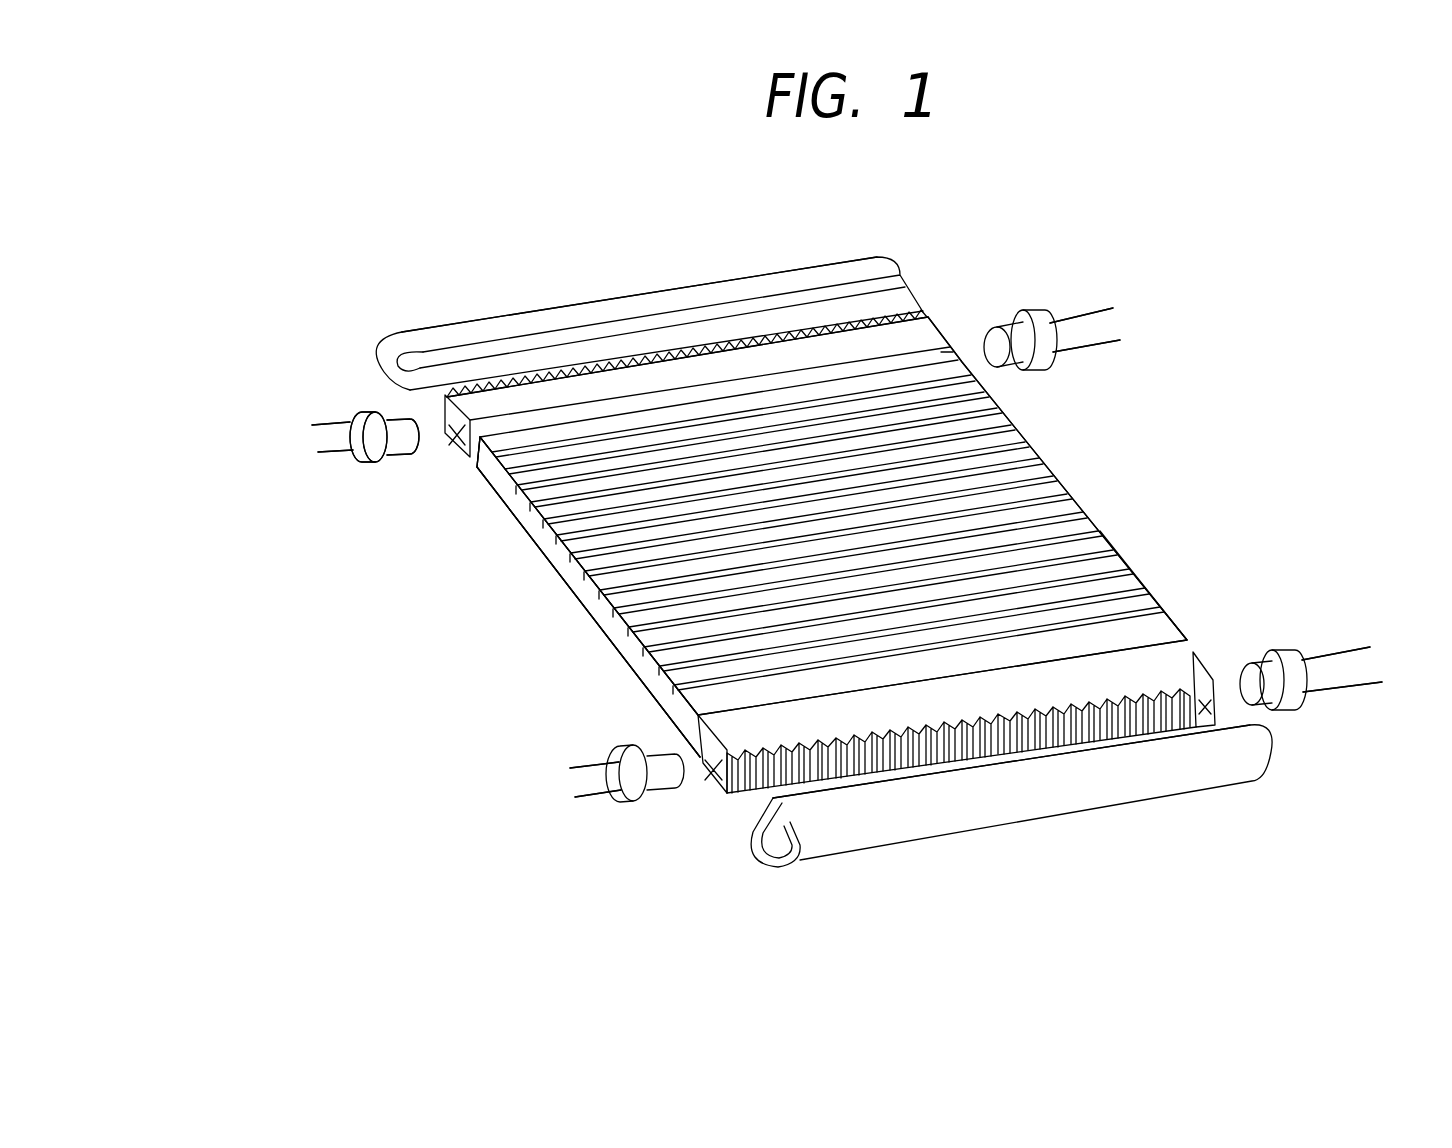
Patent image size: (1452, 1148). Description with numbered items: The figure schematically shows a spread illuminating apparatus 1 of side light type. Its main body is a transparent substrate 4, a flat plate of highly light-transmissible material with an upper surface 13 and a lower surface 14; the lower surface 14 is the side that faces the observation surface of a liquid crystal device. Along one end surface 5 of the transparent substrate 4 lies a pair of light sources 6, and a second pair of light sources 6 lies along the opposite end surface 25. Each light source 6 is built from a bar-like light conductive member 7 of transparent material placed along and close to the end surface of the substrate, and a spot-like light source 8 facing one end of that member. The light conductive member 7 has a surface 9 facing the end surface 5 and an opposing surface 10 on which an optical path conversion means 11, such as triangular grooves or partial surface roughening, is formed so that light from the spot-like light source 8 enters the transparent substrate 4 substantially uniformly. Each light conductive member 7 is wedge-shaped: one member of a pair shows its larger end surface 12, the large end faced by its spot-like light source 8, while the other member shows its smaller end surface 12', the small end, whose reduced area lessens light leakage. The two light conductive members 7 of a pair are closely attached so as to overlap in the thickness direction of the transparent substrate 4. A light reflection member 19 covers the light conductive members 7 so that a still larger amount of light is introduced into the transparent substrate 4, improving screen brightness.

The spread illuminating apparatus 1 is at (470, 702).
The transparent substrate 4 is at (592, 594).
The end surface 5 is at (478, 468).
The light source 6 is at (960, 212).
The light conductive member 7 is at (955, 352).
The spot-like light source 8 is at (1035, 325).
The surface 9 is at (752, 383).
The surface 10 is at (540, 376).
The optical path conversion means 11 is at (700, 356).
The end surface 12 is at (825, 560).
The end surface 12' is at (846, 675).
The surface 13 is at (1030, 500).
The lower surface 14 is at (598, 634).
The light reflection member 19 is at (620, 304).
The end surface 25 is at (1188, 642).